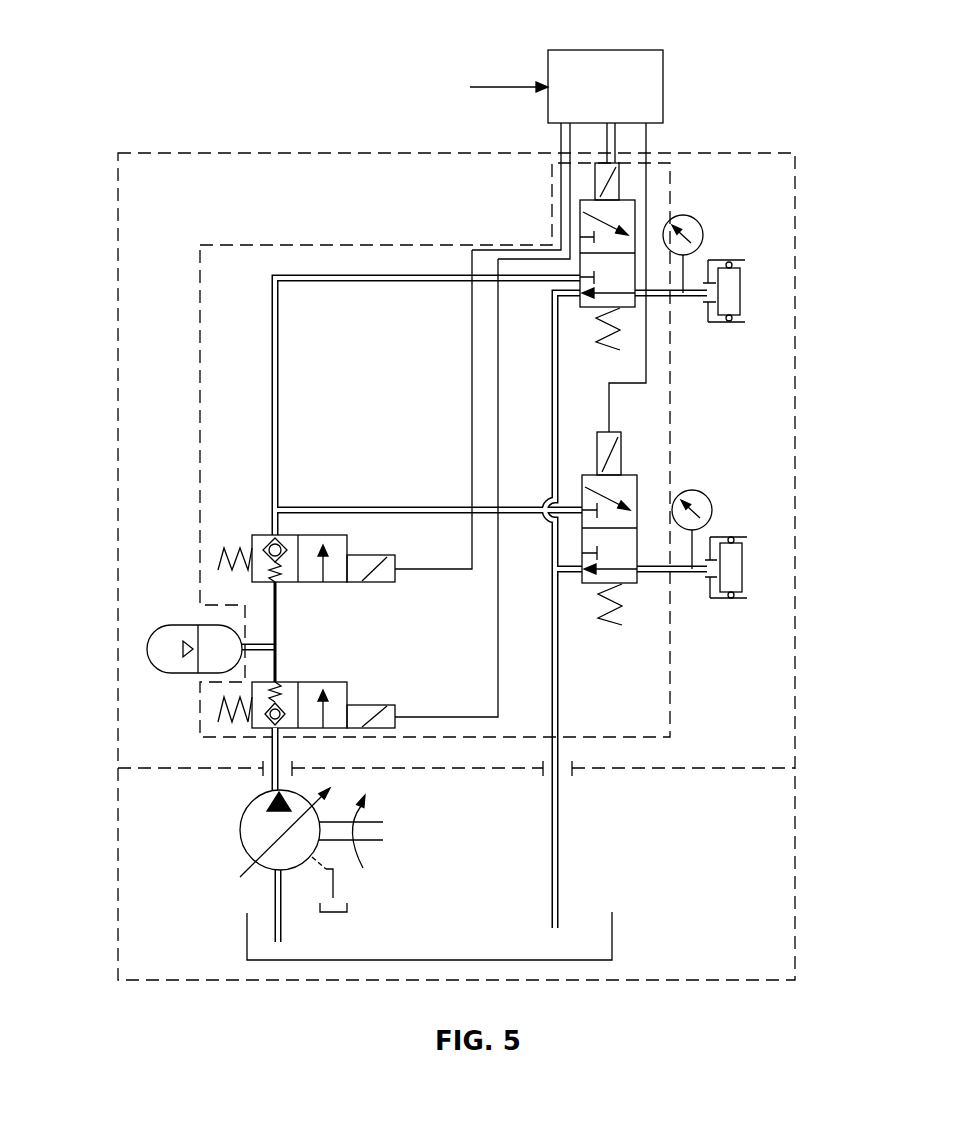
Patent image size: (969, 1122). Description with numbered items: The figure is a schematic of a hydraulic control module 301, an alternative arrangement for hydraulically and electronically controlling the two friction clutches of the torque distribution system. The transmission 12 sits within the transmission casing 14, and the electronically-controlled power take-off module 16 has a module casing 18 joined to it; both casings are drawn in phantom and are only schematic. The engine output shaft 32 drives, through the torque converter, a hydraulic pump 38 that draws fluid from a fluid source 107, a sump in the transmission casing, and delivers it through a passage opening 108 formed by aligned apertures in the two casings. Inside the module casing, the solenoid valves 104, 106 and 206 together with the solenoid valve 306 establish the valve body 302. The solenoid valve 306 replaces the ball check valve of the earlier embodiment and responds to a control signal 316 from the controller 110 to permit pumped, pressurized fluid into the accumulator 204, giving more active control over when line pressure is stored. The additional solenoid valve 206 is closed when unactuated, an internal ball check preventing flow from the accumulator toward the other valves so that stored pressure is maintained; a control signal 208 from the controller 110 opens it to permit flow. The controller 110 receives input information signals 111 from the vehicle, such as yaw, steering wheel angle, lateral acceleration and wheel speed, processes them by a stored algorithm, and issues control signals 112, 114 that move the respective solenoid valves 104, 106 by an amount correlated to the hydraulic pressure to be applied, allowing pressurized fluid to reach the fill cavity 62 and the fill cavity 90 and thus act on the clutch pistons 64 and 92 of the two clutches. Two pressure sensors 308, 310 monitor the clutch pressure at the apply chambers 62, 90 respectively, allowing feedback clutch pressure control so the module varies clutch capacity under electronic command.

The transmission 12 is at (728, 875).
The transmission casing 14 is at (797, 905).
The power take-off module 16 is at (220, 222).
The module casing 18 is at (717, 147).
The output shaft 32 is at (366, 790).
The hydraulic pump 38 is at (222, 850).
The fill cavity 62 is at (722, 252).
The clutch piston 64 is at (742, 294).
The fill cavity 90 is at (722, 527).
The clutch piston 92 is at (742, 568).
The solenoid valve 104 is at (630, 212).
The solenoid valve 106 is at (633, 476).
The fluid source 107 is at (407, 960).
The passage opening 108 is at (291, 767).
The controller 110 is at (630, 99).
The input information signals 111 is at (505, 87).
The control signal 112 is at (560, 142).
The control signal 114 is at (645, 137).
The accumulator 204 is at (170, 626).
The additional solenoid valve 206 is at (262, 535).
The control signal 208 is at (472, 408).
The hydraulic control module 301 is at (148, 435).
The valve body 302 is at (358, 245).
The solenoid valve 306 is at (312, 682).
The pressure sensor 308 is at (684, 215).
The pressure sensor 310 is at (693, 490).
The control signal 316 is at (456, 695).